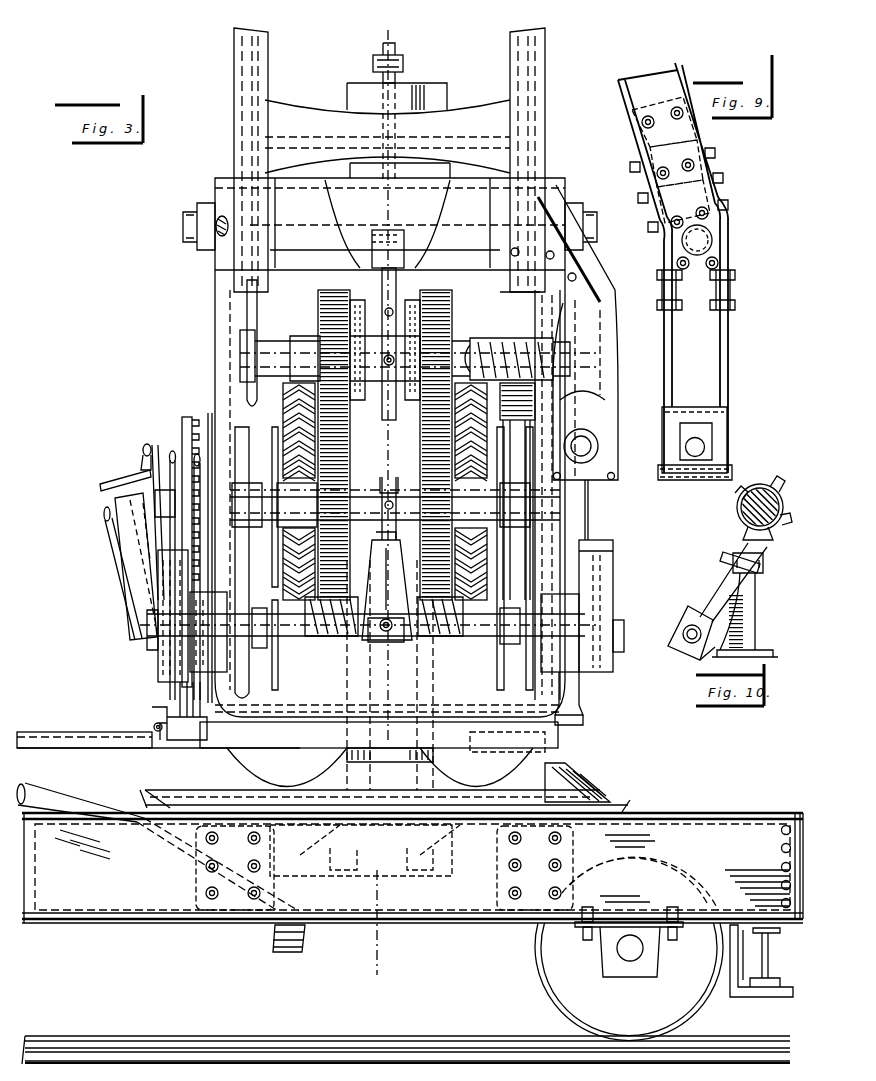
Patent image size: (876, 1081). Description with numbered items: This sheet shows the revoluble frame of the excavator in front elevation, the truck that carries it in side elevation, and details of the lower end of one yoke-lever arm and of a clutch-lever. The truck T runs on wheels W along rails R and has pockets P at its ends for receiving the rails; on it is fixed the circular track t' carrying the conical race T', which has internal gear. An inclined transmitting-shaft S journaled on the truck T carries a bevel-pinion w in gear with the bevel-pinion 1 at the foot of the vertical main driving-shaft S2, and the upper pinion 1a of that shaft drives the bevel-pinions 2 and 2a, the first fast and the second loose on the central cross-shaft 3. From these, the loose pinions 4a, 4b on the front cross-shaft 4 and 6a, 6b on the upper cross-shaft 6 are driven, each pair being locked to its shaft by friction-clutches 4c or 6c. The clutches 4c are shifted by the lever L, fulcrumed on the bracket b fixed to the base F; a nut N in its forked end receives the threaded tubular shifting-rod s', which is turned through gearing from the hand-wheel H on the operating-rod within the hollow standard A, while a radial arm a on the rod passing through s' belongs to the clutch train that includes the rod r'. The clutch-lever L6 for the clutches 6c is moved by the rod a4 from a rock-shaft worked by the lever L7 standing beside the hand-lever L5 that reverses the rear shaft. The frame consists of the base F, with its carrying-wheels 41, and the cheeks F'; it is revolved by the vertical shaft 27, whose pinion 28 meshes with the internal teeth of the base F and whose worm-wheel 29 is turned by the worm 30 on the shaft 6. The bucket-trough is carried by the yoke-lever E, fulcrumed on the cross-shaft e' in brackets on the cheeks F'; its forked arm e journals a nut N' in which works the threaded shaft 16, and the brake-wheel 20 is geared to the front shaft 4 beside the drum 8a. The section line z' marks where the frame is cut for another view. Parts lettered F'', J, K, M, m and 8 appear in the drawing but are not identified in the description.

In FIG. 3, the yoke-lever E is at (268, 86).
In FIG. 9, the yoke-lever E is at (660, 52).
In FIG. 3, the section line z' is at (383, 502).
In FIG. 3, the rod r' is at (399, 111).
In FIG. 3, the cross-shaft e' is at (386, 239).
In FIG. 9, the cross-shaft e' is at (721, 239).
In FIG. 3, the arm of yoke-lever e is at (564, 332).
In FIG. 3, the shaft 16 is at (585, 446).
In FIG. 3, the base of revoluble frame F is at (382, 484).
In FIG. 3, the uprights or cheeks F' is at (373, 495).
In FIG. 3, the housing upper bracket F'' is at (527, 302).
In FIG. 3, the clutch-lever L6 is at (372, 268).
In FIG. 3, the rod a4 is at (260, 343).
In FIG. 3, the upper cross-shaft 6 is at (290, 348).
In FIG. 3, the pinion 6b is at (326, 445).
In FIG. 3, the pinion 6a is at (447, 445).
In FIG. 3, the friction-clutches 6c is at (420, 408).
In FIG. 3, the worm-wheel 29 is at (530, 350).
In FIG. 3, the worm 30 is at (496, 345).
In FIG. 3, the front cross-shaft 4 is at (395, 505).
In FIG. 10, the front cross-shaft 4 is at (782, 500).
In FIG. 3, the pinion 4a is at (425, 440).
In FIG. 3, the pinion 4b is at (326, 491).
In FIG. 3, the friction-clutches 4c is at (410, 462).
In FIG. 3, the vertical shaft 27 is at (517, 491).
In FIG. 3, the left pulley 8 is at (264, 582).
In FIG. 3, the drum 8a is at (500, 670).
In FIG. 3, the bevel-pinion 2 is at (272, 600).
In FIG. 3, the bevel-pinion 1a is at (340, 638).
In FIG. 3, the bevel-pinion 2a is at (452, 623).
In FIG. 3, the bracket or stand b is at (400, 570).
In FIG. 10, the bracket or stand b is at (750, 600).
In FIG. 3, the shifting-lever L is at (372, 566).
In FIG. 10, the shifting-lever L is at (740, 540).
In FIG. 3, the tubular shifting-rod s' is at (377, 647).
In FIG. 10, the tubular shifting-rod s' is at (685, 633).
In FIG. 3, the rack K is at (203, 447).
In FIG. 3, the rod m is at (180, 550).
In FIG. 3, the rod M is at (176, 427).
In FIG. 3, the hand-lever L5 is at (172, 456).
In FIG. 3, the lever L7 is at (209, 480).
In FIG. 3, the hand-wheel H is at (125, 467).
In FIG. 3, the hollow standard A is at (106, 514).
In FIG. 3, the central cross-shaft 3 is at (137, 557).
In FIG. 3, the radial arm a is at (165, 489).
In FIG. 3, the brake-wheel 20 is at (590, 522).
In FIG. 3, the cylinder J is at (607, 596).
In FIG. 3, the carrying-wheels 41 is at (380, 767).
In FIG. 3, the pinion 28 is at (545, 775).
In FIG. 3, the race T' is at (577, 781).
In FIG. 3, the truck or carriage T is at (412, 868).
In FIG. 3, the transmitting-shaft S is at (158, 844).
In FIG. 3, the circular track t' is at (384, 798).
In FIG. 3, the bevel-pinion 1 is at (452, 874).
In FIG. 3, the vertical shaft S2 is at (382, 899).
In FIG. 3, the bevel-pinion w is at (289, 949).
In FIG. 3, the wheels W is at (629, 974).
In FIG. 3, the brackets or pockets P is at (782, 993).
In FIG. 3, the rails R is at (115, 1038).
In FIG. 9, the nut N' is at (695, 460).
In FIG. 10, the nut N is at (685, 662).